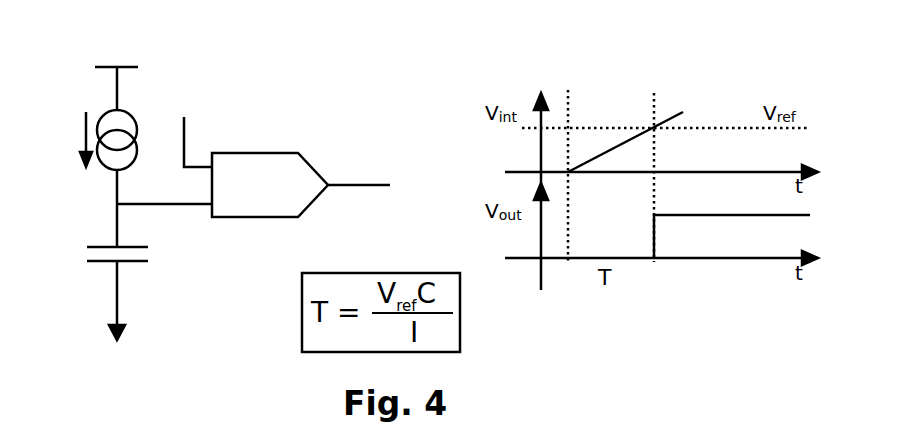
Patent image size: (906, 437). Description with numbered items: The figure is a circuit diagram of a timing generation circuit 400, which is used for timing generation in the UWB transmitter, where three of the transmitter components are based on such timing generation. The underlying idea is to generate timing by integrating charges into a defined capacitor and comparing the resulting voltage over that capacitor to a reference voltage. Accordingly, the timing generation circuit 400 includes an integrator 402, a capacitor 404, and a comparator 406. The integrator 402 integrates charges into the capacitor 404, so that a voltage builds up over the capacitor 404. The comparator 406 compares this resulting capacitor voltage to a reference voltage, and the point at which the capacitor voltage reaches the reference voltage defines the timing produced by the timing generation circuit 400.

The timing generation circuit 400 is at (361, 96).
The integrator 402 is at (133, 112).
The capacitor 404 is at (98, 265).
The comparator 406 is at (283, 218).